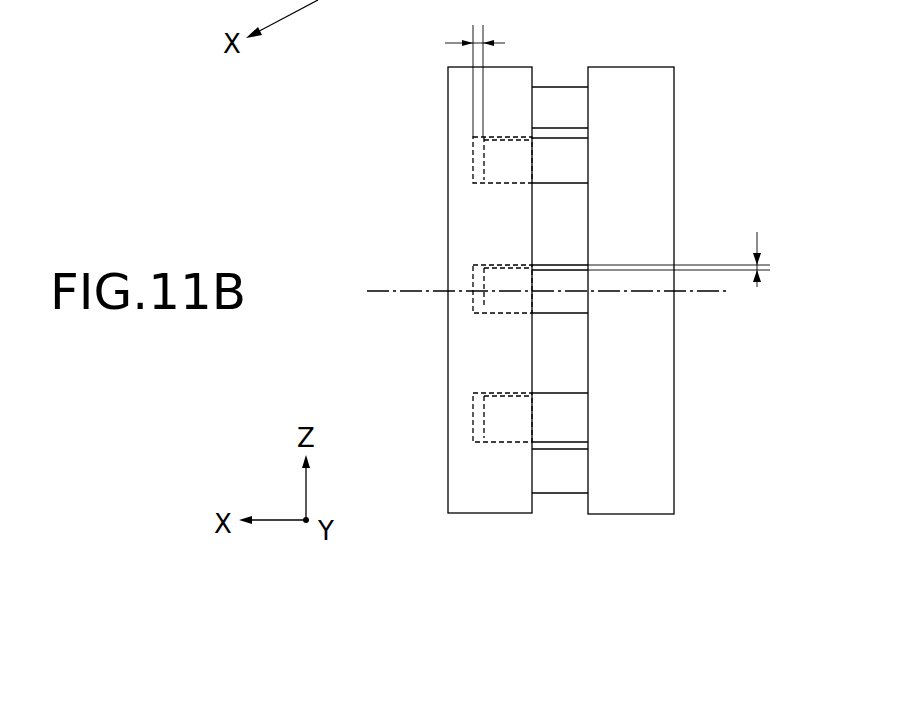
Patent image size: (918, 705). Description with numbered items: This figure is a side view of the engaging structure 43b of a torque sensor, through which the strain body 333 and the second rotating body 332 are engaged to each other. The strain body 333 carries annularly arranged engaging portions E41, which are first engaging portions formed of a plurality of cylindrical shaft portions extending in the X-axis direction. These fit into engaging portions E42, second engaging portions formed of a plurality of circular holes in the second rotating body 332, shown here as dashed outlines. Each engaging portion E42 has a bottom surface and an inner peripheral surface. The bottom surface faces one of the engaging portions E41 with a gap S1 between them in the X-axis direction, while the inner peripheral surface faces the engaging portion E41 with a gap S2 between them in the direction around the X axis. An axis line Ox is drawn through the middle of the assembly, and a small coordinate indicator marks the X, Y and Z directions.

The second rotating body 332 is at (448, 153).
The strain body 333 is at (640, 67).
The engaging portions E41 is at (563, 425).
The engaging portions E42 is at (503, 442).
The engaging structure 43b is at (545, 368).
The gap S1 is at (489, 70).
The gap S2 is at (696, 259).
The optical axis Ox is at (395, 296).